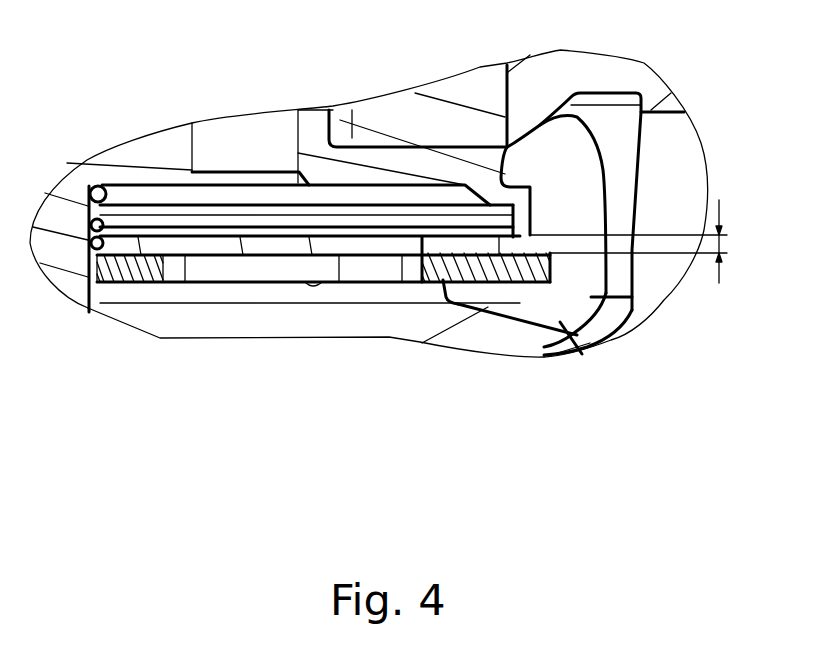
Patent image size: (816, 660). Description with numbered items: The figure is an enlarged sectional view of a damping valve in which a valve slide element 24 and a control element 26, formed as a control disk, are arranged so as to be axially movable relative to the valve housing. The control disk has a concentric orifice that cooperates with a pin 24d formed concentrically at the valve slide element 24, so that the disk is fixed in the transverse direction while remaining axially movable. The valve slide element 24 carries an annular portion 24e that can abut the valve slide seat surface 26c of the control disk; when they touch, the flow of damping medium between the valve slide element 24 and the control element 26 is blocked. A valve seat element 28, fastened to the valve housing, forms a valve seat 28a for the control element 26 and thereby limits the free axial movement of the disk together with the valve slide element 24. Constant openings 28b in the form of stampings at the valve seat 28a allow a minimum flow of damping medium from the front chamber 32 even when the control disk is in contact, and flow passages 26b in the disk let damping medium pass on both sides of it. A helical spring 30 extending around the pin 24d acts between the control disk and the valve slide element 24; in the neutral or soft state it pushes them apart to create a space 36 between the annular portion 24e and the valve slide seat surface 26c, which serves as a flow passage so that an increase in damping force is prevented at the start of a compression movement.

The valve slide element 24 is at (309, 133).
The pin 24d is at (55, 247).
The annular portion 24e is at (491, 253).
The control element 26 is at (631, 290).
The flow passages 26b is at (287, 270).
The valve slide seat surface 26c is at (505, 253).
The valve seat element 28 is at (535, 335).
The valve seat 28a is at (88, 300).
The constant openings 28b is at (435, 283).
The helical spring 30 is at (107, 185).
The front chamber 32 is at (205, 323).
The space 36 is at (724, 242).